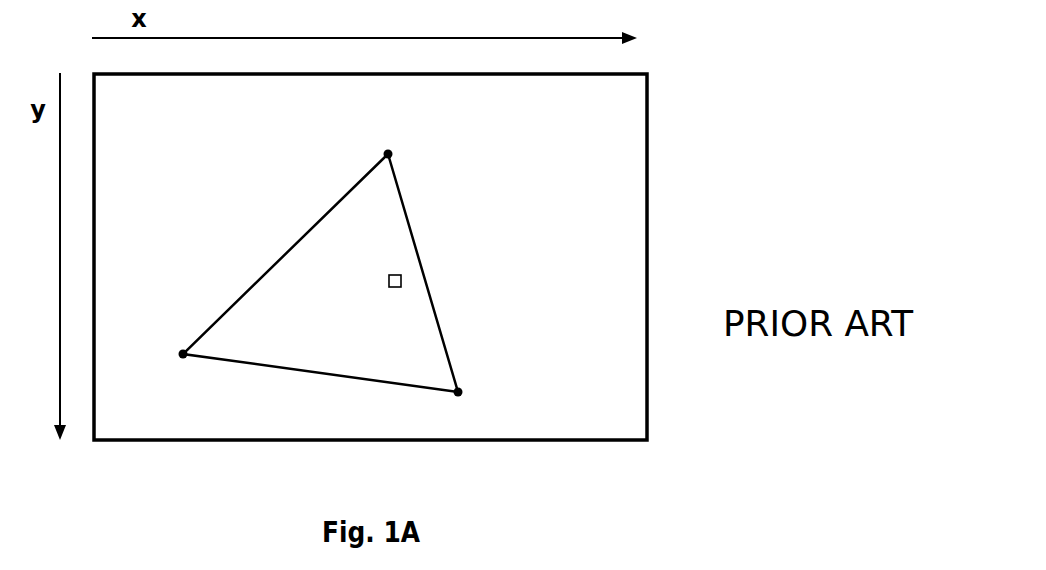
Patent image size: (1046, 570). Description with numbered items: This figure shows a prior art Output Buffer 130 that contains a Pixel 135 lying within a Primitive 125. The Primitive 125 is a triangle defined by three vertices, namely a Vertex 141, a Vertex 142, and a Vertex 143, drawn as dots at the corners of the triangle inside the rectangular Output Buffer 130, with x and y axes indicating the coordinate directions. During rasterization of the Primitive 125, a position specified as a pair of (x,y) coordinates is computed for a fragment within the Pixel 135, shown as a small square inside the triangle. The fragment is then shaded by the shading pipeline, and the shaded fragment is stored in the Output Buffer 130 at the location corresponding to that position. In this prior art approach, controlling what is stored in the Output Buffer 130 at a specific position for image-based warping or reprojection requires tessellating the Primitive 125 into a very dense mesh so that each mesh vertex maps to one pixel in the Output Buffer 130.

The output buffer 130 is at (577, 109).
The primitive 125 is at (326, 324).
The vertex 141 is at (388, 154).
The vertex 142 is at (458, 392).
The vertex 143 is at (183, 354).
The pixel 135 is at (401, 277).